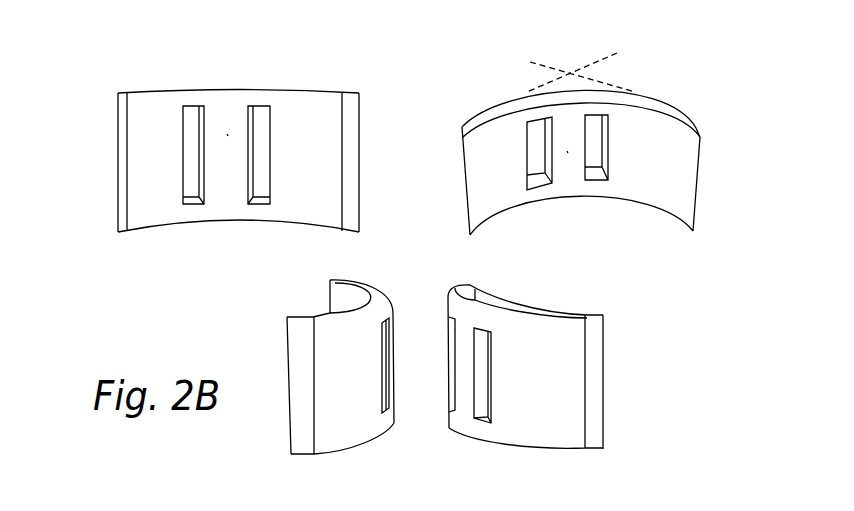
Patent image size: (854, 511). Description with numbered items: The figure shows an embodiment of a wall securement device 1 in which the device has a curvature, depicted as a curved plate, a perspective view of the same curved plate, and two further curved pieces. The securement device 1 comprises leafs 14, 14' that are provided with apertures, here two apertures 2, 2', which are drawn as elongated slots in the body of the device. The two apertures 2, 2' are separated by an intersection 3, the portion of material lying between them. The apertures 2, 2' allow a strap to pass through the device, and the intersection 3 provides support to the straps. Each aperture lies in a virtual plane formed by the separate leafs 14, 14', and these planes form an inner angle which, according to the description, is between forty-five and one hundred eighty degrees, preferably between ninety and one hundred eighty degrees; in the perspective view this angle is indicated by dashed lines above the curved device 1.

The wall securement device 1 is at (111, 84).
The aperture 2 is at (367, 222).
The aperture 2' is at (449, 217).
The intersection 3 is at (228, 135).
The leaf 14 is at (99, 162).
The leaf 14' is at (368, 162).